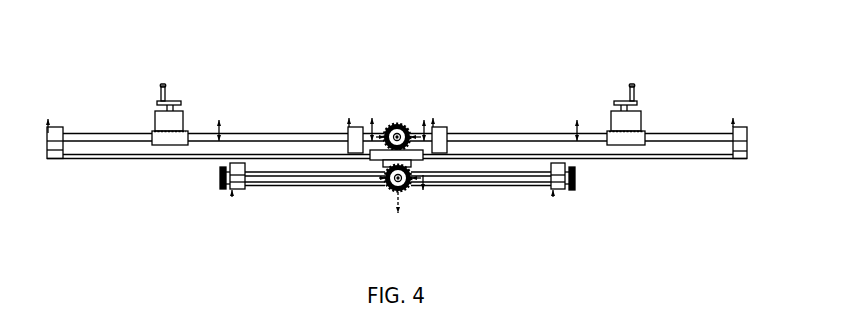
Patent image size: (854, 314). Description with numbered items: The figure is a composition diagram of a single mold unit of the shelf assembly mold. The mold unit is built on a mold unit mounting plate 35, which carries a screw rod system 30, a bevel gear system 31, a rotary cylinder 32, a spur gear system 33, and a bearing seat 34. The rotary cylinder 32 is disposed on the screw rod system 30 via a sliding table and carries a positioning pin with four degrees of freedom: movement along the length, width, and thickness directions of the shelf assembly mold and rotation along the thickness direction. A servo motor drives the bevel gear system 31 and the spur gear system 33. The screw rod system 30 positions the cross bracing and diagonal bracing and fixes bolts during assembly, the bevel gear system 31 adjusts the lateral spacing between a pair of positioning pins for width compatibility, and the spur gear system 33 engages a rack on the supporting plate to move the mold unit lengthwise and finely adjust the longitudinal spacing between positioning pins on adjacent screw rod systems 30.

The screw rod system 30 is at (189, 132).
The bevel gear system 31 is at (403, 127).
The rotary cylinder 32 is at (628, 123).
The spur gear system 33 is at (575, 179).
The bearing seat 34 is at (240, 178).
The mold unit mounting plate 35 is at (75, 159).